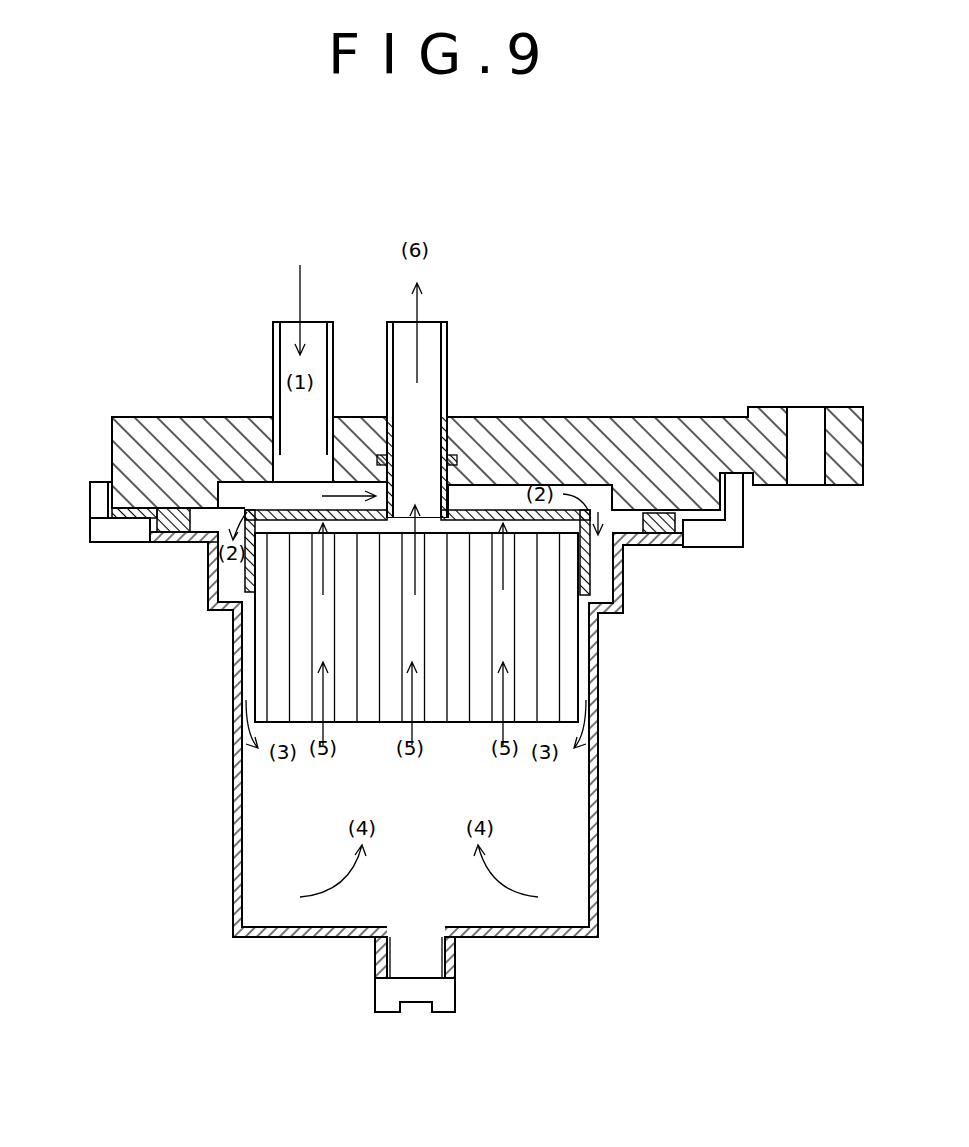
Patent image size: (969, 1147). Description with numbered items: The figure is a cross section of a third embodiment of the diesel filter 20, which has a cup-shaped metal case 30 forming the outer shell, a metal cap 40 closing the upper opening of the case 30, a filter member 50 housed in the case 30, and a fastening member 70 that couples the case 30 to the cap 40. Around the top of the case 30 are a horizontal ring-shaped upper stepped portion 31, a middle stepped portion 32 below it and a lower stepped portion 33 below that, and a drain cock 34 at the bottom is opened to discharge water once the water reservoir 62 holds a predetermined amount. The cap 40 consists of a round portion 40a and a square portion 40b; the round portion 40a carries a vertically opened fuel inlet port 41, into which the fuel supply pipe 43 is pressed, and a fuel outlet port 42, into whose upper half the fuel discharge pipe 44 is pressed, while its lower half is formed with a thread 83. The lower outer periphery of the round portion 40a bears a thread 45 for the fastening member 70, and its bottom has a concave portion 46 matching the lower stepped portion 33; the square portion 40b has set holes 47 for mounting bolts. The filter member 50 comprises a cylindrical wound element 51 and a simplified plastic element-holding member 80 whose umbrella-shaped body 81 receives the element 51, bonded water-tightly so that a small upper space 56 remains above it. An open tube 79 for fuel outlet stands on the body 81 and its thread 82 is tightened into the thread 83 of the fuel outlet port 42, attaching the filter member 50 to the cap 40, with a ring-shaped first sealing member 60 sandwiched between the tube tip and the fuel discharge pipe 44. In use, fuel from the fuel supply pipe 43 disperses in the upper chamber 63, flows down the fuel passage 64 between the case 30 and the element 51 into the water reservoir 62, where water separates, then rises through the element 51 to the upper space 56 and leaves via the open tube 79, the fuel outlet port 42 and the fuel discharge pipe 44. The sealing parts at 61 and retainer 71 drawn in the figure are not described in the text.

The diesel filter 20 is at (843, 394).
The case 30 is at (609, 801).
The upper stepped portion 31 is at (122, 514).
The middle stepped portion 32 is at (173, 538).
The lower stepped portion 33 is at (222, 608).
The drain cock 34 is at (443, 997).
The cap 40 is at (143, 407).
The round portion 40a is at (114, 412).
The square portion 40b is at (860, 404).
The fuel inlet port 41 is at (290, 467).
The fuel outlet port 42 is at (415, 455).
The fuel supply pipe 43 is at (273, 323).
The fuel discharge pipe 44 is at (447, 322).
The thread 45 is at (108, 482).
The concave portion 46 is at (610, 510).
The set hole 47 is at (806, 418).
The filter member 50 is at (508, 627).
The element 51 is at (570, 628).
The upper space 56 is at (515, 517).
The first sealing member 60 is at (378, 457).
The seal member 61 is at (152, 523).
The water reservoir 62 is at (262, 855).
The upper chamber 63 is at (575, 490).
The fuel passage 64 is at (240, 667).
The fastening member 70 is at (735, 523).
The retaining member 71 is at (105, 500).
The open tube for fuel outlet 79 is at (447, 504).
The element-holding member 80 is at (503, 496).
The body 81 is at (213, 580).
The thread 82 is at (451, 478).
The thread 83 is at (452, 470).